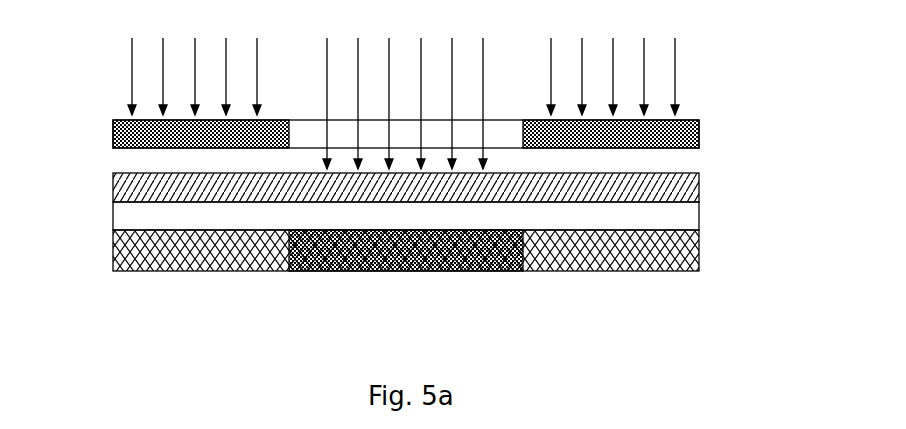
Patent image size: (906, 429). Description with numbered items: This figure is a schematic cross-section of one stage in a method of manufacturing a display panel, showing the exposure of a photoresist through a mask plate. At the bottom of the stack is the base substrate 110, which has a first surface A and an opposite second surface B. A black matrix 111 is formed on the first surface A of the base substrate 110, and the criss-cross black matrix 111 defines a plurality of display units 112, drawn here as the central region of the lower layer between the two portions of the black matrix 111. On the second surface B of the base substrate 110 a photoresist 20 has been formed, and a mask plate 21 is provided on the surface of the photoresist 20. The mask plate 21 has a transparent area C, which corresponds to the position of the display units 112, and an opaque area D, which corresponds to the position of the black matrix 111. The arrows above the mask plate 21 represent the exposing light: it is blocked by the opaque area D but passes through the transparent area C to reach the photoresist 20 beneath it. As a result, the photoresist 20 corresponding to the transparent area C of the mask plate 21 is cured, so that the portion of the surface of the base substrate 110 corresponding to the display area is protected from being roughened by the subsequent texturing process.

The mask plate 21 is at (124, 142).
The photoresist 20 is at (124, 190).
The base substrate 110 is at (688, 211).
The black matrix 111 is at (688, 256).
The display units 112 is at (413, 250).
The first surface A is at (113, 237).
The second surface B is at (699, 202).
The transparent area C is at (493, 131).
The opaque area D is at (688, 133).